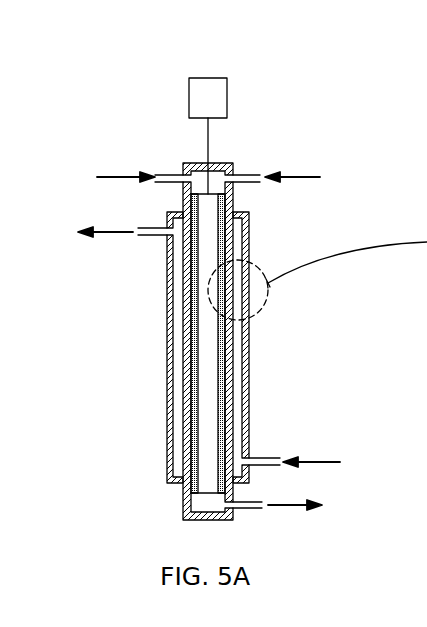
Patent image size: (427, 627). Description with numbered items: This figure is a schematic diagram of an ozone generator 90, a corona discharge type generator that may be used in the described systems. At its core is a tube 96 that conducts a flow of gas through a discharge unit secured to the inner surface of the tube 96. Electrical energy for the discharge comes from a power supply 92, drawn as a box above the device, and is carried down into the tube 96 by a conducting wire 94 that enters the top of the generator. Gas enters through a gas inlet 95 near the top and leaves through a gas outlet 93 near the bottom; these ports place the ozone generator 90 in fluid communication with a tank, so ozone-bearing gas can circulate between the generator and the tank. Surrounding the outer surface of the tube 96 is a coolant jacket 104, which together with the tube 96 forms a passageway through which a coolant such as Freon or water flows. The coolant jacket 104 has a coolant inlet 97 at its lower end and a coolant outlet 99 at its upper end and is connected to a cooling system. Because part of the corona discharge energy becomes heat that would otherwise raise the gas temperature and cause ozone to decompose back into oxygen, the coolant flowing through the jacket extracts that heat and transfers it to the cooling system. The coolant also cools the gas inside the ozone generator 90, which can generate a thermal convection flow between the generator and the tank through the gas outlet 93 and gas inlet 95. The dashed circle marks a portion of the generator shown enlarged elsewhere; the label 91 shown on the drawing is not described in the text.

The ozone generator 90 is at (199, 52).
The reactor housing / outer tube 91 is at (176, 175).
The power supply 92 is at (227, 98).
The gas outlet 93 is at (247, 508).
The conducting wire 94 is at (208, 150).
The gas inlet 95 is at (290, 175).
The tube 96 is at (190, 500).
The coolant inlet 97 is at (261, 458).
The coolant outlet 99 is at (148, 236).
The coolant jacket 104 is at (250, 375).